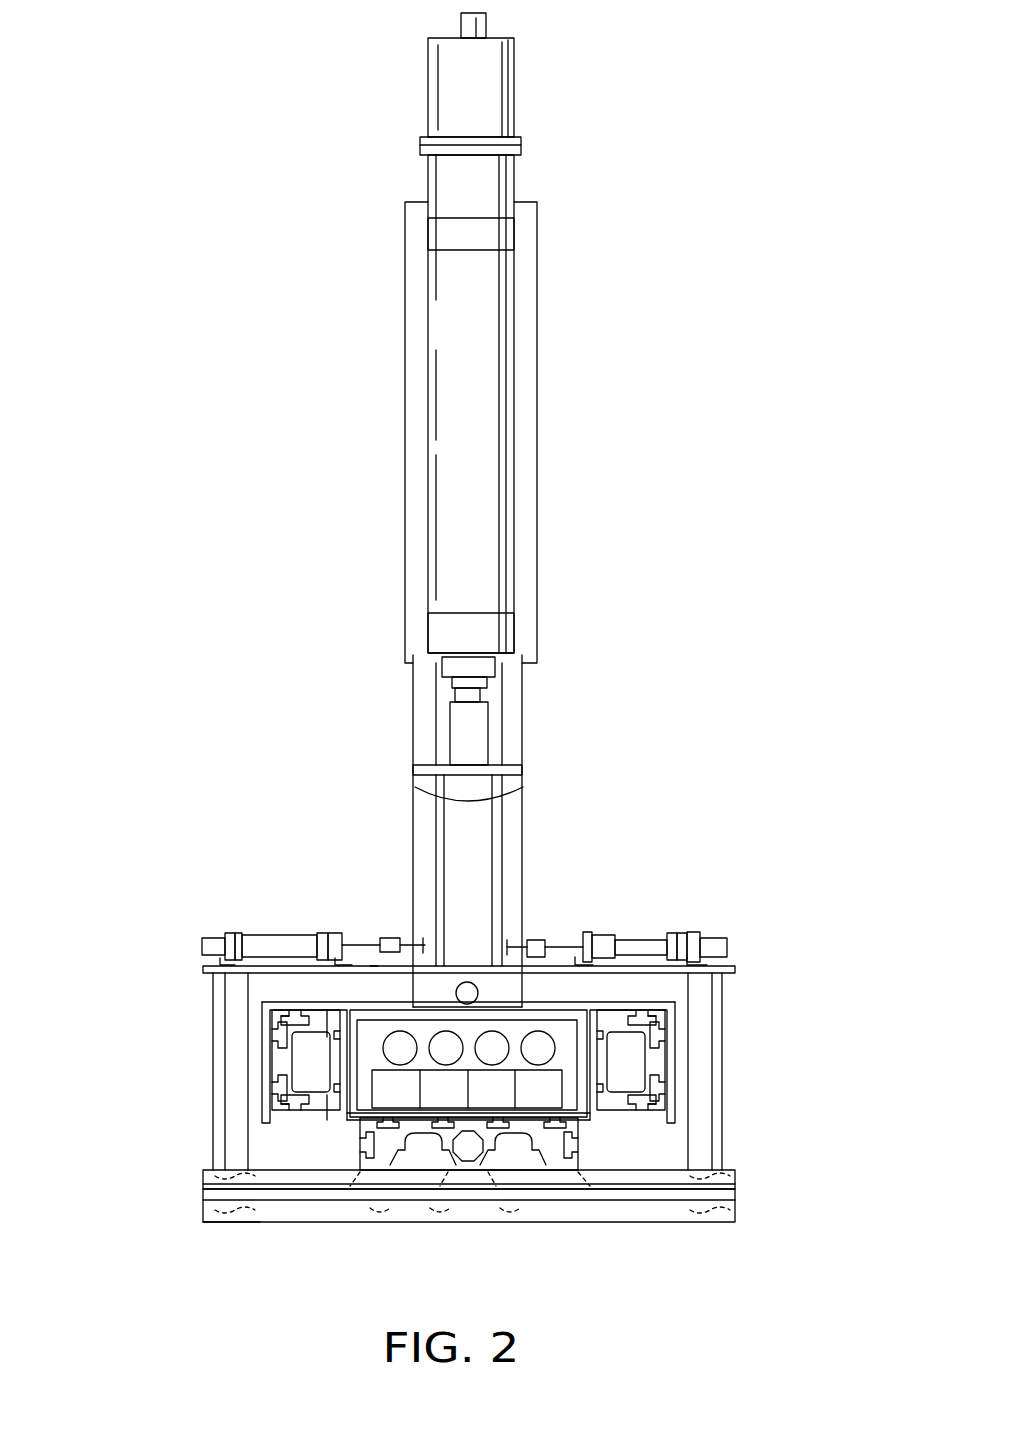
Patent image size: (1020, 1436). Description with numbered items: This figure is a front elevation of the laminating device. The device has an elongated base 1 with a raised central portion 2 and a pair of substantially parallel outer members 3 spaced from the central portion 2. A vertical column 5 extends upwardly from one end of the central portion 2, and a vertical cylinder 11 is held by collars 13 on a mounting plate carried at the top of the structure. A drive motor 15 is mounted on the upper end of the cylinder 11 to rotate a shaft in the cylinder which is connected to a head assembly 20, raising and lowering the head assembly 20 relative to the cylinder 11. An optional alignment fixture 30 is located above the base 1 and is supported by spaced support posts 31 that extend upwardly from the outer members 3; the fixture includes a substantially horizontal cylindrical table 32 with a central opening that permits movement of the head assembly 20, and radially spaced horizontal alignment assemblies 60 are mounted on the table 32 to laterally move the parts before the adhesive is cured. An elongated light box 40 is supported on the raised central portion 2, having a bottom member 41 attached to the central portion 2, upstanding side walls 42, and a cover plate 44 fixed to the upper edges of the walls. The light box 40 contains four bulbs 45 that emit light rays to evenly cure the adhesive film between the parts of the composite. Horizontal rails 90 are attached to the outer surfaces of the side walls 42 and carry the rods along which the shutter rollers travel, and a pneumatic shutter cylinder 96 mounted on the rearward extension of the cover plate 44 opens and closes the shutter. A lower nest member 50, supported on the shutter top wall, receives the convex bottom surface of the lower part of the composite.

The elongated base 1 is at (240, 1226).
The raised central portion 2 is at (488, 1222).
The outer members 3 is at (732, 1222).
The vertical column 5 is at (522, 695).
The vertical cylinder 11 is at (450, 470).
The collars 13 is at (447, 233).
The drive motor 15 is at (447, 80).
The head assembly 20 is at (500, 743).
The alignment fixture 30 is at (375, 963).
The support posts 31 is at (230, 1015).
The cylindrical table 32 is at (732, 966).
The light box 40 is at (342, 1125).
The bottom member 41 is at (587, 1130).
The side walls 42 is at (333, 1055).
The cover plate 44 is at (572, 1014).
The bulbs 45 is at (495, 1048).
The lower nest member 50 is at (502, 996).
The alignment assemblies 60 is at (268, 930).
The rails 90 is at (650, 1060).
The pneumatic shutter cylinder 96 is at (463, 980).